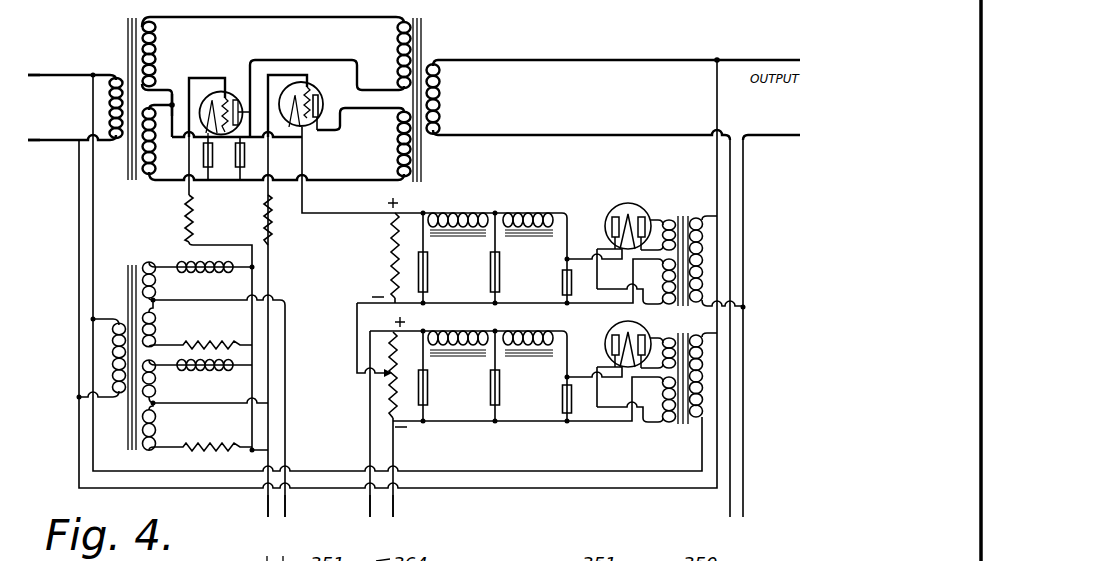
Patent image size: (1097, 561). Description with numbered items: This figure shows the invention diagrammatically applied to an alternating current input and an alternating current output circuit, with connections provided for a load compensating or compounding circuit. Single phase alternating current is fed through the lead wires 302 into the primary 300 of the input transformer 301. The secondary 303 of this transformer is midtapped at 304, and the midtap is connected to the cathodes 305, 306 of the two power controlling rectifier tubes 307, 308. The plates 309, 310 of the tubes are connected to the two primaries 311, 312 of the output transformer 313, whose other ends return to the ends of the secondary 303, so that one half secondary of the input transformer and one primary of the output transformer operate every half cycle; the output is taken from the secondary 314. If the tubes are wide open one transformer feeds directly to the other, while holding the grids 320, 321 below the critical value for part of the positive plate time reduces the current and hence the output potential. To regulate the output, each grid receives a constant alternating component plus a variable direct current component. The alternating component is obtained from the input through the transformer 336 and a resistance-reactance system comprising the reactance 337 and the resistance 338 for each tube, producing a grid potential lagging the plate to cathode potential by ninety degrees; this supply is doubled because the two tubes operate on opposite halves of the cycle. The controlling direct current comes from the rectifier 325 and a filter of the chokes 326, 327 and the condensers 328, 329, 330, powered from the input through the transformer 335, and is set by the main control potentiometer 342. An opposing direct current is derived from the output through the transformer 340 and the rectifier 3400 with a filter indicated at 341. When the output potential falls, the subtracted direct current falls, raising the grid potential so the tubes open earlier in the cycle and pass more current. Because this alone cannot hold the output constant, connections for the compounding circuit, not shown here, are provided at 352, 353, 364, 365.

The primary 300 is at (112, 77).
The input transformer 301 is at (135, 182).
The lead wires 302 is at (53, 77).
The secondary 303 is at (157, 172).
The midtap 304 is at (173, 103).
The cathode 305 is at (218, 92).
The cathode 306 is at (296, 126).
The rectifier tube 307 is at (231, 93).
The rectifier tube 308 is at (316, 89).
The plate 309 is at (238, 108).
The plate 310 is at (327, 125).
The primary 311 is at (397, 33).
The primary 312 is at (394, 146).
The output transformer 313 is at (419, 167).
The secondary 314 is at (440, 112).
The grid 320 is at (190, 197).
The grid 321 is at (305, 124).
The rectifier 325 is at (616, 327).
The choke 326 is at (444, 339).
The choke 327 is at (540, 328).
The condenser 328 is at (428, 397).
The condenser 329 is at (503, 397).
The condenser 330 is at (572, 406).
The transformer 335 is at (684, 426).
The transformer 336 is at (127, 298).
The reactance 337 is at (212, 382).
The resistance 338 is at (214, 441).
The transformer 340 is at (681, 218).
The filter 341 is at (530, 214).
The main control potentiometer 342 is at (388, 381).
The rectifier 3400 is at (634, 204).
The connection 352 is at (267, 502).
The connection 353 is at (286, 503).
The connection 364 is at (369, 505).
The connection 365 is at (394, 512).